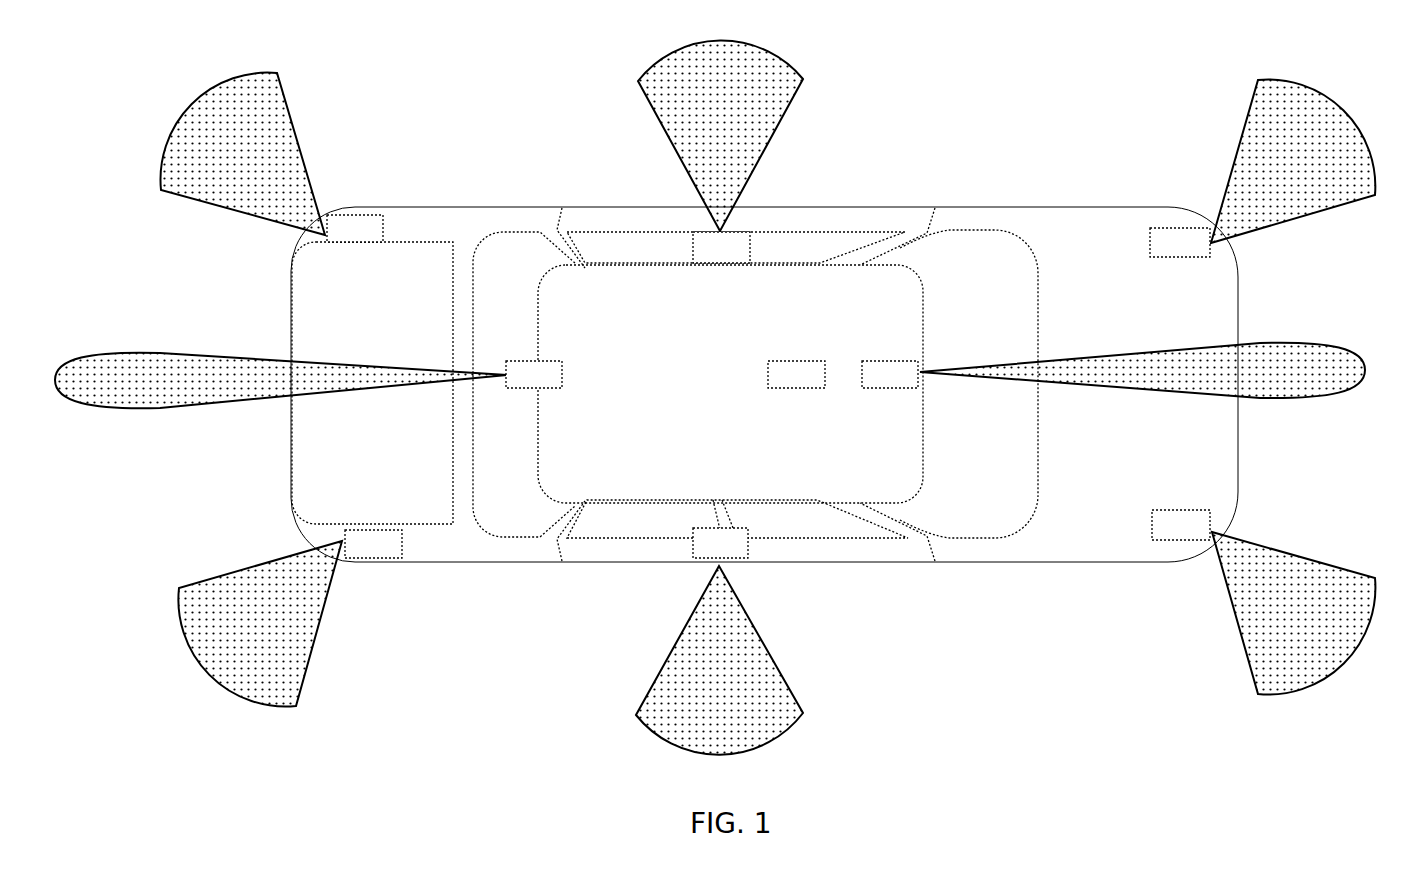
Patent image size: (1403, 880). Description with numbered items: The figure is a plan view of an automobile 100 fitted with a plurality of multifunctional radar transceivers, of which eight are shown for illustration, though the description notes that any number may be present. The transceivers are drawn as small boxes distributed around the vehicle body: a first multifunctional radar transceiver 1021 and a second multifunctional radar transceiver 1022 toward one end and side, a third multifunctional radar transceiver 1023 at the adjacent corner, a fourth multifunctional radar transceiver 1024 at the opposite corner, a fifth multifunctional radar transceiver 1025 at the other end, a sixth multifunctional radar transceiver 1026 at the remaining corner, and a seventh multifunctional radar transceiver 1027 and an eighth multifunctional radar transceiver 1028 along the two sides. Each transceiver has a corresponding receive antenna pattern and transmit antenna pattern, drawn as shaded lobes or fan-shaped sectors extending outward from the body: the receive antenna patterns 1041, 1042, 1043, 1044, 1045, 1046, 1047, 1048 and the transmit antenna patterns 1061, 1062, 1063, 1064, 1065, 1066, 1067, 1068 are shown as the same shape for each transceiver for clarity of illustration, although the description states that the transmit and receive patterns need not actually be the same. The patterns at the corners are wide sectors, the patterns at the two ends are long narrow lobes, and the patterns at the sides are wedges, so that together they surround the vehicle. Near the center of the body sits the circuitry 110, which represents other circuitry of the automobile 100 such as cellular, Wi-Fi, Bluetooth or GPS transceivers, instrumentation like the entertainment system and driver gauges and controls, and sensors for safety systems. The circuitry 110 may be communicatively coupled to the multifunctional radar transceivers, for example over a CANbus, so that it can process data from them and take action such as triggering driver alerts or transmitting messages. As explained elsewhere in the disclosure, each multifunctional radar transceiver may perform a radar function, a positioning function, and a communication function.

The automobile 100 is at (619, 210).
The circuitry 110 is at (815, 386).
The multifunctional radar transceiver 1021 is at (1196, 254).
The multifunctional radar transceiver 1022 is at (906, 386).
The multifunctional radar transceiver 1023 is at (1198, 534).
The multifunctional radar transceiver 1024 is at (371, 240).
The multifunctional radar transceiver 1025 is at (550, 386).
The multifunctional radar transceiver 1026 is at (390, 554).
The multifunctional radar transceiver 1027 is at (738, 256).
The multifunctional radar transceiver 1028 is at (738, 552).
The receive antenna pattern 1041 is at (1252, 161).
The receive antenna pattern 1042 is at (1146, 353).
The receive antenna pattern 1043 is at (1300, 610).
The receive antenna pattern 1044 is at (286, 154).
The receive antenna pattern 1045 is at (281, 363).
The receive antenna pattern 1046 is at (240, 624).
The receive antenna pattern 1047 is at (778, 136).
The receive antenna pattern 1048 is at (776, 660).
The transmit antenna pattern 1061 is at (1238, 147).
The transmit antenna pattern 1062 is at (1310, 329).
The transmit antenna pattern 1063 is at (1324, 546).
The transmit antenna pattern 1064 is at (302, 147).
The transmit antenna pattern 1065 is at (110, 352).
The transmit antenna pattern 1066 is at (232, 576).
The transmit antenna pattern 1067 is at (802, 80).
The transmit antenna pattern 1068 is at (801, 716).